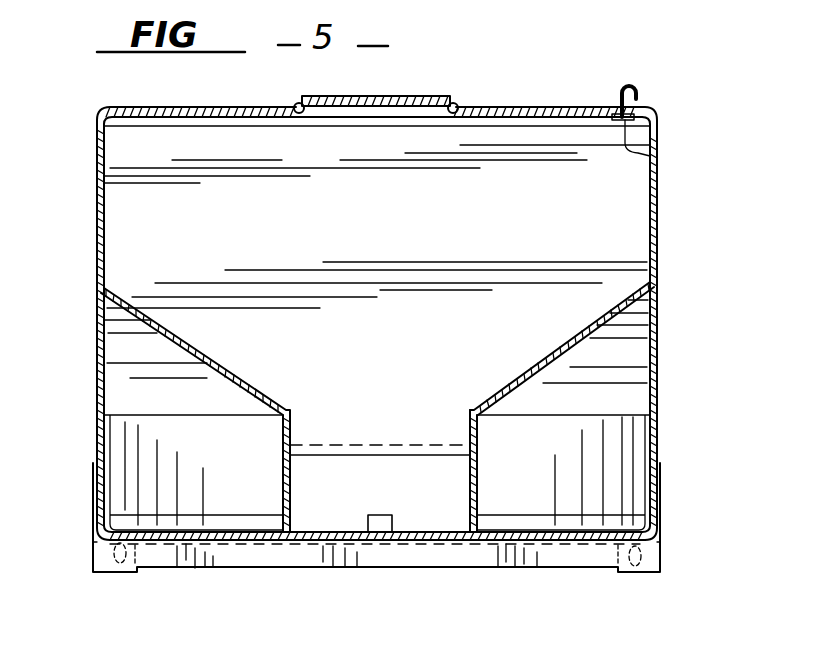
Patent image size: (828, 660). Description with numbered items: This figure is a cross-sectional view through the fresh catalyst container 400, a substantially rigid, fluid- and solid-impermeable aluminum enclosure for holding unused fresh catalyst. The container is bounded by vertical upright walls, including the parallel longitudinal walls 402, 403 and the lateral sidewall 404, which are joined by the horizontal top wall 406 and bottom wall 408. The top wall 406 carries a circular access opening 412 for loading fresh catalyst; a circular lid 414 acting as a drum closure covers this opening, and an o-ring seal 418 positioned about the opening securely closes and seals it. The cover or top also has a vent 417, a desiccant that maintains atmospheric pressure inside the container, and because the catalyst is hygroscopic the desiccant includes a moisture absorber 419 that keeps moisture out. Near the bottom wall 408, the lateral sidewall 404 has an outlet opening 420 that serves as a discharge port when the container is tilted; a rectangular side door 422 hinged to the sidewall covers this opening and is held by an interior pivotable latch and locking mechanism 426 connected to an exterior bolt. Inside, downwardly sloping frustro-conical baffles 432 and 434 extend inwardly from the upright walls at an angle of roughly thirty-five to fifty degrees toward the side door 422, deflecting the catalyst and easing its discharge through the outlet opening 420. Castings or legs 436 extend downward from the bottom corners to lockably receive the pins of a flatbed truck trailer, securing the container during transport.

The fresh catalyst container 400 is at (658, 114).
The longitudinal wall 402 is at (657, 272).
The longitudinal wall 403 is at (97, 240).
The lateral sidewall 404 is at (422, 250).
The top wall 406 is at (527, 107).
The bottom wall 408 is at (490, 568).
The access opening 412 is at (320, 118).
The lid 414 is at (382, 96).
The vent 417 is at (622, 88).
The o-ring seal 418 is at (296, 106).
The moisture absorber 419 is at (650, 156).
The outlet opening 420 is at (477, 486).
The side door 422 is at (375, 448).
The latch and locking mechanism 426 is at (368, 525).
The baffle 432 is at (207, 355).
The baffle 434 is at (545, 358).
The legs 436 is at (133, 573).